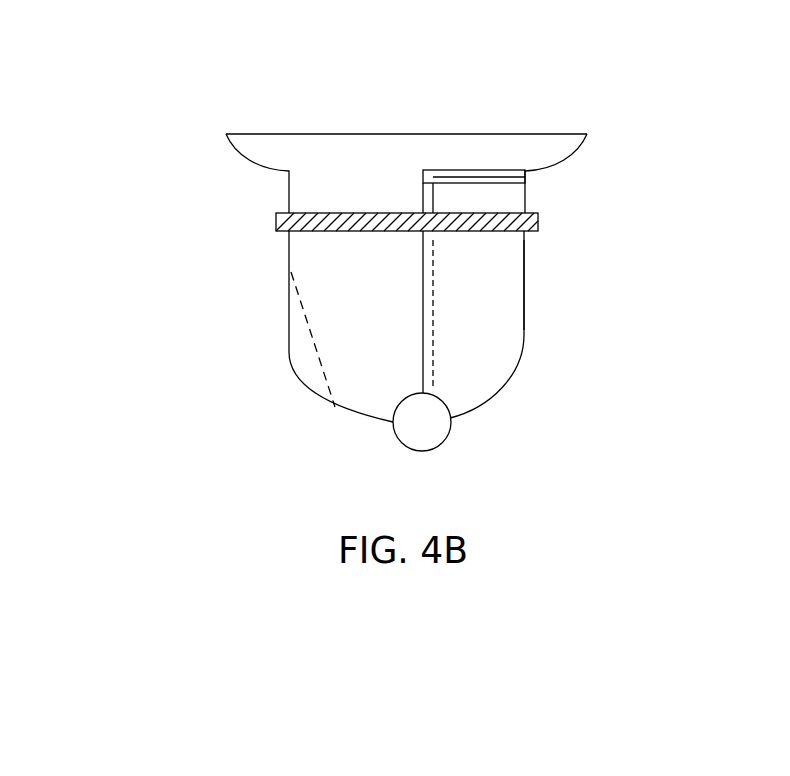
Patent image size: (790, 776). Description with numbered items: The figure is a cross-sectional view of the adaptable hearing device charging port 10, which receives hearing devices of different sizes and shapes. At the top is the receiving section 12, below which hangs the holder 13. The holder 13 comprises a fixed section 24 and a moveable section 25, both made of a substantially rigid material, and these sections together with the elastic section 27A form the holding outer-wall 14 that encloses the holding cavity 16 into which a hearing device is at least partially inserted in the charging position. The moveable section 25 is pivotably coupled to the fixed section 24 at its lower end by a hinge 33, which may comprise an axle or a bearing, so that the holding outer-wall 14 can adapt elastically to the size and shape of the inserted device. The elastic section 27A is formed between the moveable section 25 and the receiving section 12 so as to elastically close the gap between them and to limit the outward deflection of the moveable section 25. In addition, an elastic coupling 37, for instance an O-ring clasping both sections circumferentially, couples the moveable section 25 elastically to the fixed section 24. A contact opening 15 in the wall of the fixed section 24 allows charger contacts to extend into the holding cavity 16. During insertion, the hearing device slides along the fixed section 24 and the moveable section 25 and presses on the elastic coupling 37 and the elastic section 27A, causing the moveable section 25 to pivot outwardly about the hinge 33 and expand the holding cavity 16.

The adaptable hearing device charging port 10 is at (172, 85).
The receiving section 12 is at (536, 125).
The elastic section 27A is at (527, 180).
The elastic coupling 37 is at (275, 222).
The holder 13 is at (542, 252).
The holding outer-wall 14 is at (524, 308).
The contact opening 15 is at (325, 372).
The holding cavity 16 is at (485, 357).
The fixed section 24 is at (364, 330).
The moveable section 25 is at (492, 331).
The hinge 33 is at (450, 432).